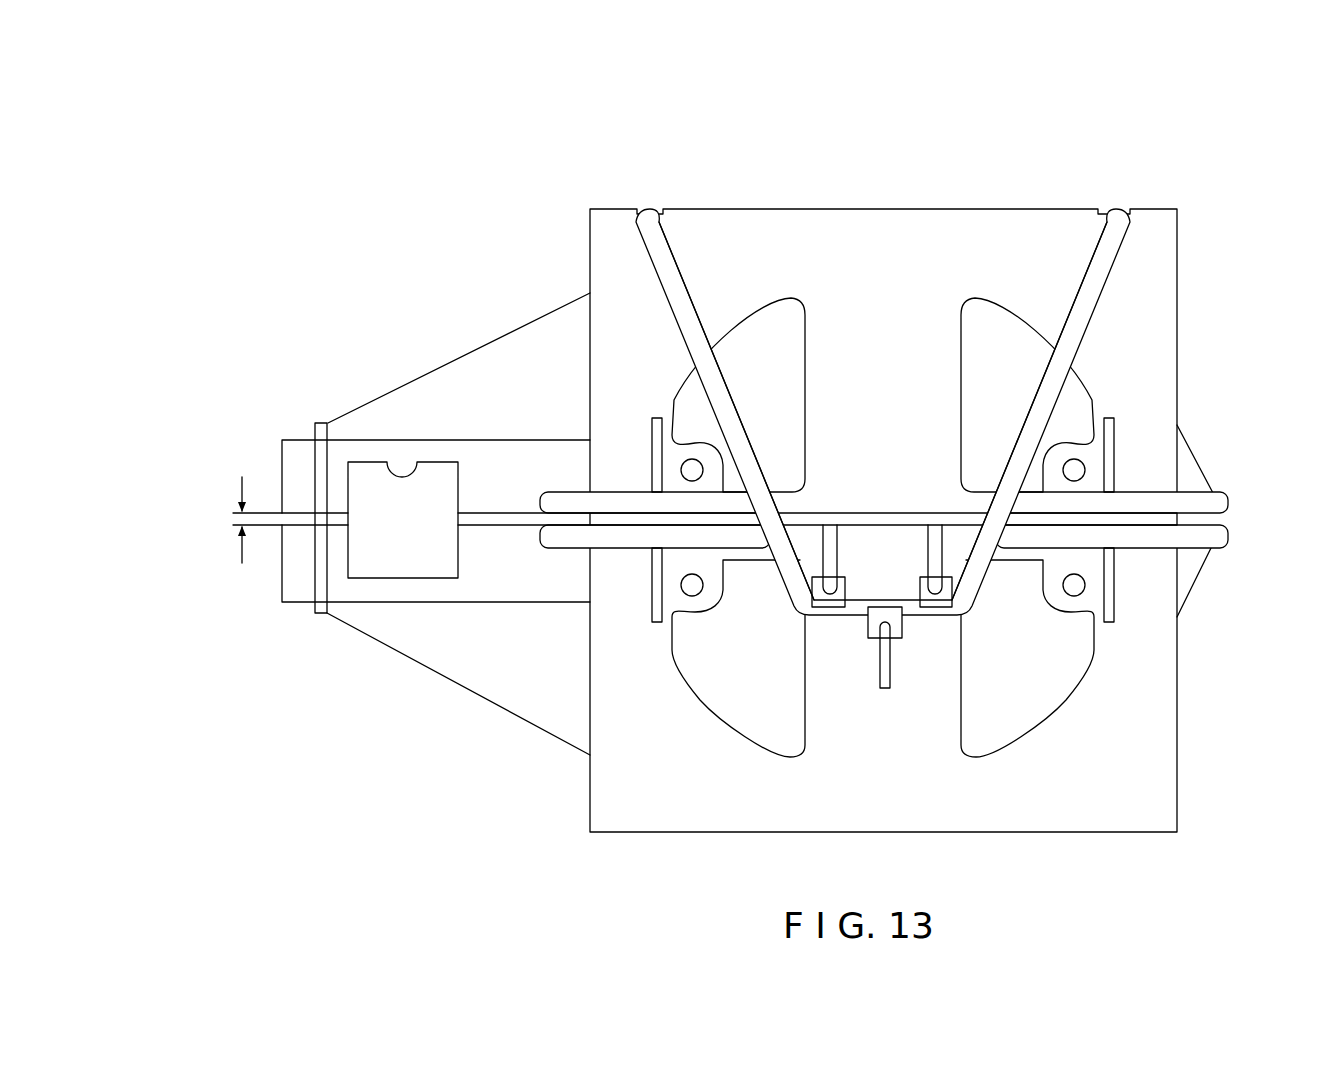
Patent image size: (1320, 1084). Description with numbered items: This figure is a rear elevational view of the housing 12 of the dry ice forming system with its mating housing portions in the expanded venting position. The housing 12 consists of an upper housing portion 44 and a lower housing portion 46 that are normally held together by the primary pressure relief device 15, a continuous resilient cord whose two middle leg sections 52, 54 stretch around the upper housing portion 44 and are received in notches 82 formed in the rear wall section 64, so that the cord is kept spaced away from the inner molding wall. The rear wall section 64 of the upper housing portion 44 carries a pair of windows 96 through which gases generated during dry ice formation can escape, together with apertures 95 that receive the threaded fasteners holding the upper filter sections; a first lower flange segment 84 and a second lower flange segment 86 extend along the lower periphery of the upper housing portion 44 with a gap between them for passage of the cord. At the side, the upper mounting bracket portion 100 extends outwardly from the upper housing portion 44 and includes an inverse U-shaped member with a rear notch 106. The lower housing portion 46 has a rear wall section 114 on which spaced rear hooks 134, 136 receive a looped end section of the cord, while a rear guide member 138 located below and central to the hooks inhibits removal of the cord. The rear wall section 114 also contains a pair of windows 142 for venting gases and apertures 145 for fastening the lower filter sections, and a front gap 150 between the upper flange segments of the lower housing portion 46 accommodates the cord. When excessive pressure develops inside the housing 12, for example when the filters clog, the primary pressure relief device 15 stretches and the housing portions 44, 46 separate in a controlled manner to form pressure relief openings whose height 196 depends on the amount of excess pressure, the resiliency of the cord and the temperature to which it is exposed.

The housing 12 is at (1200, 162).
The primary pressure relief device 15 is at (1091, 257).
The upper housing portion 44 is at (1180, 255).
The lower housing portion 46 is at (1182, 663).
The middle leg section 52 is at (690, 292).
The middle leg section 54 is at (1073, 315).
The rear wall section 64 is at (1160, 288).
The notches 82 is at (657, 210).
The first lower flange segment 84 is at (565, 490).
The second lower flange segment 86 is at (1157, 490).
The apertures 95 is at (683, 468).
The windows 96 is at (795, 337).
The upper mounting bracket portion 100 is at (358, 438).
The rear notch 106 is at (415, 470).
The rear wall section 114 is at (1155, 745).
The rear hook 134 is at (850, 575).
The rear hook 136 is at (910, 575).
The rear guide member 138 is at (900, 625).
The windows 142 is at (724, 676).
The apertures 145 is at (688, 597).
The front gap 150 is at (857, 622).
The height 196 is at (232, 514).